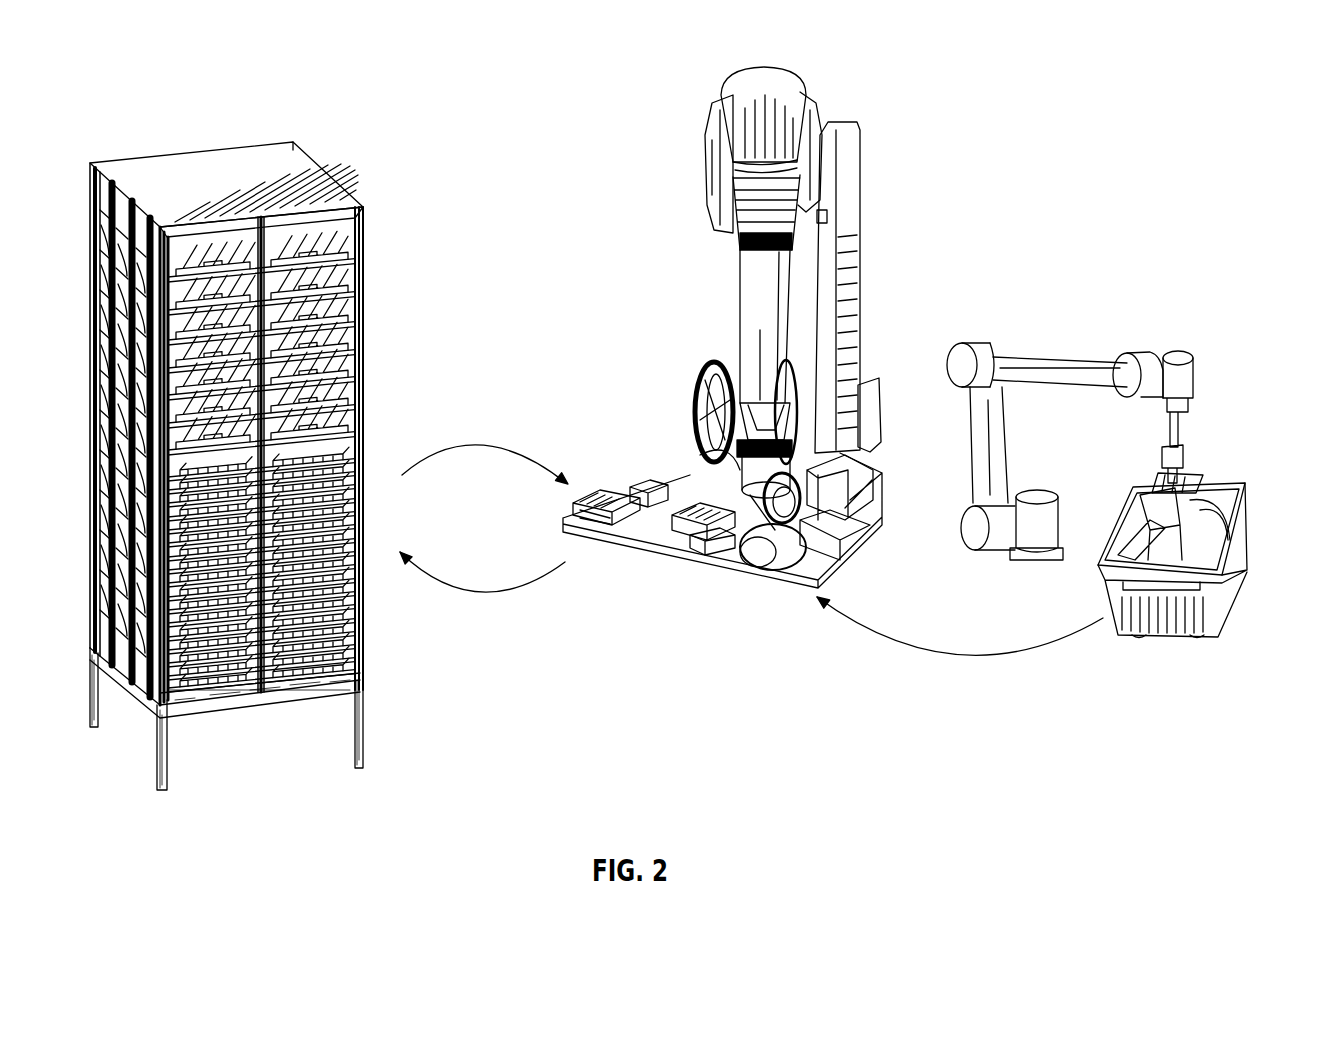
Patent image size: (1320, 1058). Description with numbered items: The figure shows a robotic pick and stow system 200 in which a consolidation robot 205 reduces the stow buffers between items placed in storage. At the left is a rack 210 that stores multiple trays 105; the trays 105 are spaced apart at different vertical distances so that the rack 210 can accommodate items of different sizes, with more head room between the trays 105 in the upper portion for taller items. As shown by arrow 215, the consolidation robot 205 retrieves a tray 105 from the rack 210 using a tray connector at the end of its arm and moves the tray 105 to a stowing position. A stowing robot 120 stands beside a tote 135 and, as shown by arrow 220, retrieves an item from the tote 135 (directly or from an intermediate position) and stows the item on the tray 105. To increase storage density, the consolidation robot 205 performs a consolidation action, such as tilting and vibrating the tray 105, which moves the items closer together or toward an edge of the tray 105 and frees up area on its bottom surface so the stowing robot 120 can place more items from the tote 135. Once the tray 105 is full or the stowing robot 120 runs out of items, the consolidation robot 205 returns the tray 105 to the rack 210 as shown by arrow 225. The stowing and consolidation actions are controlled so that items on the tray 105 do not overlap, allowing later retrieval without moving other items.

The tray 105 is at (333, 268).
The stowing robot 120 is at (1050, 357).
The tote 135 is at (1247, 570).
The robotic pick and stow system 200 is at (1132, 250).
The consolidation robot 205 is at (858, 291).
The rack 210 is at (323, 166).
The arrow 215 is at (485, 445).
The arrow 220 is at (965, 655).
The arrow 225 is at (495, 593).